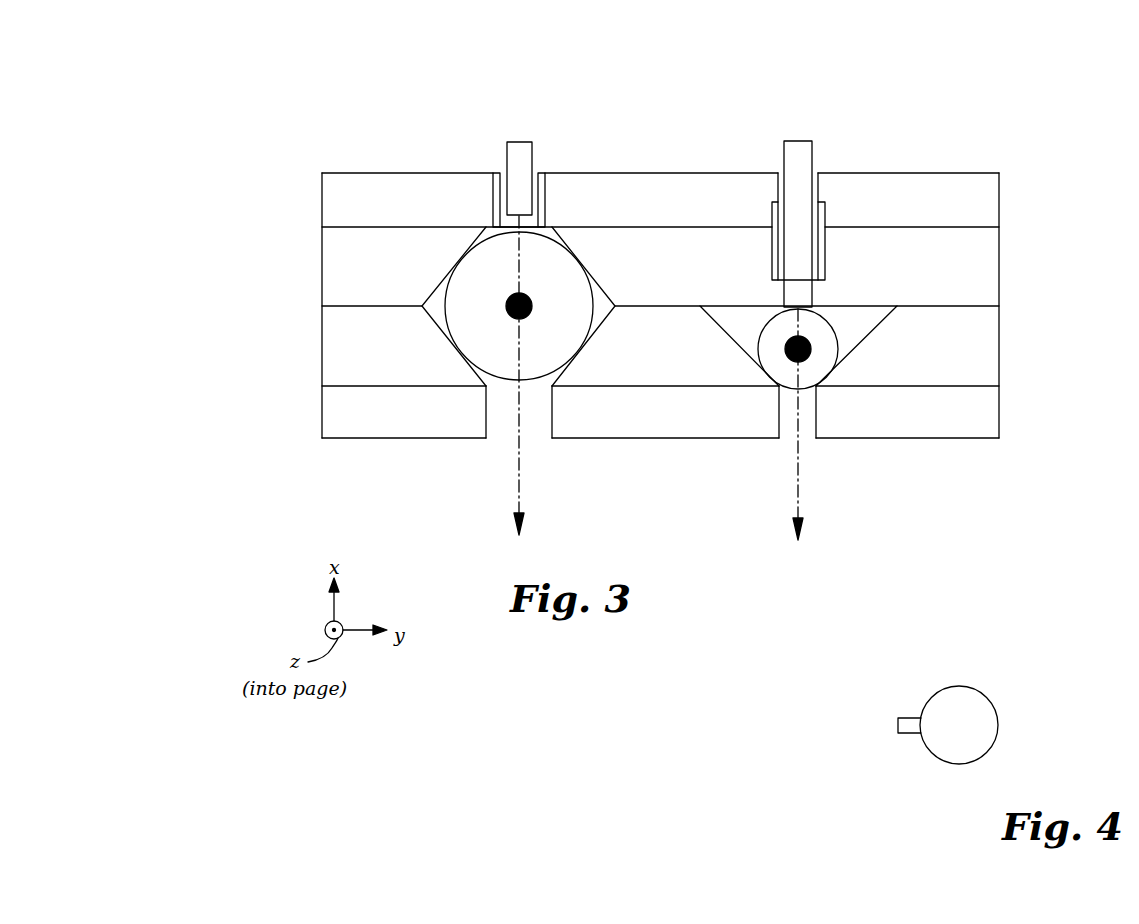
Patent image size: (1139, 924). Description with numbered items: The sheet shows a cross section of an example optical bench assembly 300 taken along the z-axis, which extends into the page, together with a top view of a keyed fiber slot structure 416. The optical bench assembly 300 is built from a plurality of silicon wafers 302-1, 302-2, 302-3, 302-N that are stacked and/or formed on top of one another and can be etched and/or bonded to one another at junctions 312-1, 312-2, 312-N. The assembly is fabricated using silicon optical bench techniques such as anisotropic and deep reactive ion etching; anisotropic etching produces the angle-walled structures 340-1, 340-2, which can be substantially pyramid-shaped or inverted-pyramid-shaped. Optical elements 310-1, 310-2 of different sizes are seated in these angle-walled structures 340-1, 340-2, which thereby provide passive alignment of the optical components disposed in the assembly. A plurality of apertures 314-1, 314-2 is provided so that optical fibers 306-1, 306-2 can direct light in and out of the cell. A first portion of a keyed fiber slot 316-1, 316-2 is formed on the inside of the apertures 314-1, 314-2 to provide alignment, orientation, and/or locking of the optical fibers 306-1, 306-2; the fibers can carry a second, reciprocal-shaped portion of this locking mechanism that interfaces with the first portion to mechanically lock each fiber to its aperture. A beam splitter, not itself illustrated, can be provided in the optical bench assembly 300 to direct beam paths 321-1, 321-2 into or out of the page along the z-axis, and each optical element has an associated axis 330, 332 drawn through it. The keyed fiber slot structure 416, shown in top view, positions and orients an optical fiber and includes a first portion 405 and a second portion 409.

In FIG. 3, the optical bench assembly 300 is at (929, 68).
In FIG. 3, the silicon wafer 302-N is at (321, 200).
In FIG. 3, the silicon wafer 302-3 is at (321, 267).
In FIG. 3, the silicon wafer 302-2 is at (321, 347).
In FIG. 3, the silicon wafer 302-1 is at (321, 413).
In FIG. 3, the junction 312-N is at (999, 225).
In FIG. 3, the junction 312-2 is at (999, 305).
In FIG. 3, the junction 312-1 is at (999, 385).
In FIG. 3, the optical fiber 306-1 is at (517, 141).
In FIG. 3, the optical fiber 306-2 is at (794, 141).
In FIG. 3, the keyed fiber slot 316-1 is at (500, 176).
In FIG. 3, the keyed fiber slot 316-2 is at (780, 198).
In FIG. 3, the angle-walled structure 340-1 is at (451, 270).
In FIG. 3, the angle-walled structure 340-2 is at (745, 356).
In FIG. 3, the optical element 310-1 is at (493, 348).
In FIG. 3, the optical element 310-2 is at (828, 355).
In FIG. 3, the beam path 321-1 is at (532, 300).
In FIG. 3, the beam path 321-2 is at (807, 338).
In FIG. 3, the axis 330 is at (517, 520).
In FIG. 3, the axis 332 is at (800, 517).
In FIG. 3, the aperture 314-1 is at (532, 428).
In FIG. 3, the aperture 314-2 is at (787, 423).
In FIG. 4, the keyed fiber slot structure 416 is at (954, 710).
In FIG. 4, the first portion 405 is at (996, 708).
In FIG. 4, the second portion 409 is at (898, 728).